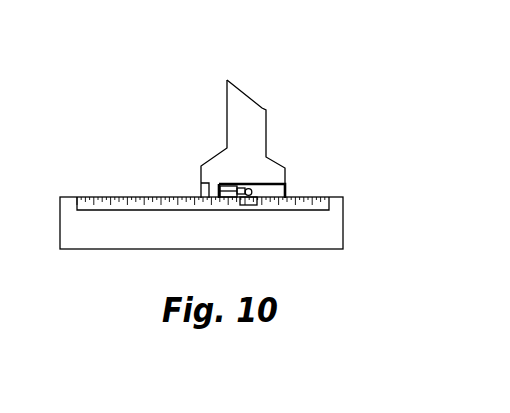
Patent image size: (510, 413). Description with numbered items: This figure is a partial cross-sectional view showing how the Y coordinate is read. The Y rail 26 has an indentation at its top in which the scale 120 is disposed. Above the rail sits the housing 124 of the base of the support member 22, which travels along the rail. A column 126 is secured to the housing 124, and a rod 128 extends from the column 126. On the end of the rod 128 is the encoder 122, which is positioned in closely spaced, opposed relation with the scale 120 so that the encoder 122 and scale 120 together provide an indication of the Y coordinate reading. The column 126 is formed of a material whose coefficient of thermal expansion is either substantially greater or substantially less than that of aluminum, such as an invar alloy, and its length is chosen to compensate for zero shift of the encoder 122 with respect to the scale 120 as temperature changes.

The support member 22 is at (233, 97).
The Y rail 26 is at (343, 230).
The scale 120 is at (313, 198).
The encoder 122 is at (248, 206).
The housing 124 is at (237, 147).
The column 126 is at (224, 210).
The rod 128 is at (242, 184).